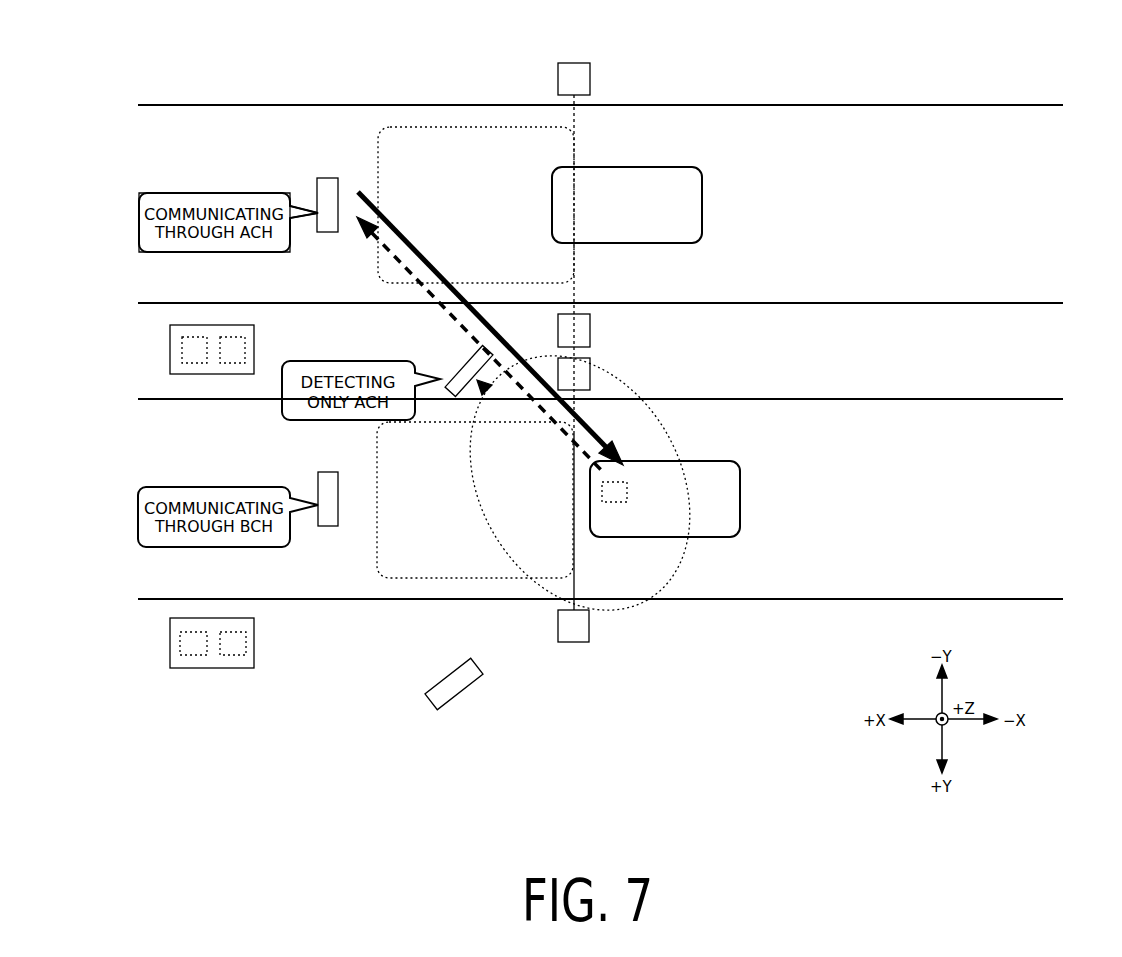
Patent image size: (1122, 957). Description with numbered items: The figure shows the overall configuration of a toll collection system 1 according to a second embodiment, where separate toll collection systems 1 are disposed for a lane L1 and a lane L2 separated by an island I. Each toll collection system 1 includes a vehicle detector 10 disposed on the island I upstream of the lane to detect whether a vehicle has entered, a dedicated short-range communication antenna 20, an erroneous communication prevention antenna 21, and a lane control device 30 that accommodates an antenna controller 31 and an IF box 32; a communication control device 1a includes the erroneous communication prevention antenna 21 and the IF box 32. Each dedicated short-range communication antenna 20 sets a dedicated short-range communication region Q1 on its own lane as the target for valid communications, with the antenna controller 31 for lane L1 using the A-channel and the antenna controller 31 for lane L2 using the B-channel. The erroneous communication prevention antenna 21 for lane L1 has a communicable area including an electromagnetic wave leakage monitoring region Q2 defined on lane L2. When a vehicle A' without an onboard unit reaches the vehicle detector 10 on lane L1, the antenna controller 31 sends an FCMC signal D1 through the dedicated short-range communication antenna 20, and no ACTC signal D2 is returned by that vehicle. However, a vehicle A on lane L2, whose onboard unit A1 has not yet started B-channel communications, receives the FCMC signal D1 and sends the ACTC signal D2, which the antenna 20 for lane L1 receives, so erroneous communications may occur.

The toll collection system 1 is at (384, 86).
The communication control device 1a is at (158, 283).
The vehicle detector 10 is at (590, 78).
The dedicated short-range communication antenna 20 is at (327, 178).
The erroneous communication prevention antenna 21 is at (460, 362).
The lane control device 30 is at (170, 350).
The antenna controller 31 is at (190, 337).
The IF box 32 is at (232, 337).
The vehicle A is at (694, 499).
The vehicle A' is at (660, 205).
The onboard unit A1 is at (627, 495).
The FCMC signal D1 is at (445, 276).
The ACTC signal D2 is at (563, 450).
The lane L1 is at (965, 212).
The lane L2 is at (963, 503).
The island I is at (1030, 358).
The dedicated short-range communication region Q1 is at (453, 127).
The electromagnetic wave leakage monitoring region Q2 is at (667, 565).